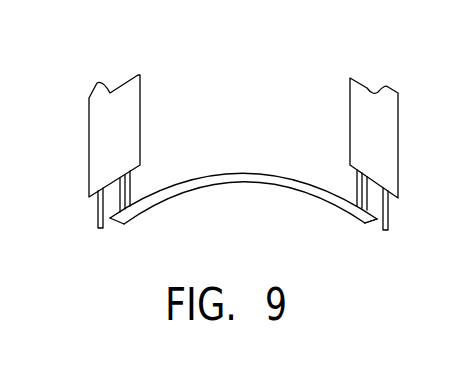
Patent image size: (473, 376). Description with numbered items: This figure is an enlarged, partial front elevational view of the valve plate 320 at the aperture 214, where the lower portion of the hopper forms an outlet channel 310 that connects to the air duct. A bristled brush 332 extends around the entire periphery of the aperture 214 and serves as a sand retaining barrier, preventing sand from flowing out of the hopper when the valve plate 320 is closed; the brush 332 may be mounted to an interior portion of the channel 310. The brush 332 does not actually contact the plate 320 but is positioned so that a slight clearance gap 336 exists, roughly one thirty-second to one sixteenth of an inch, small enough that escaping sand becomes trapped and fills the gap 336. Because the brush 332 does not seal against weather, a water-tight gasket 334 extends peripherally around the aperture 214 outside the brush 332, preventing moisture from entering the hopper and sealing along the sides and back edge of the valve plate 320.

The aperture 214 is at (295, 84).
The outlet channel 310 is at (88, 147).
The valve plate 320 is at (243, 183).
The bristled brush 332 is at (133, 182).
The water-tight gasket 334 is at (98, 210).
The clearance gap 336 is at (356, 194).